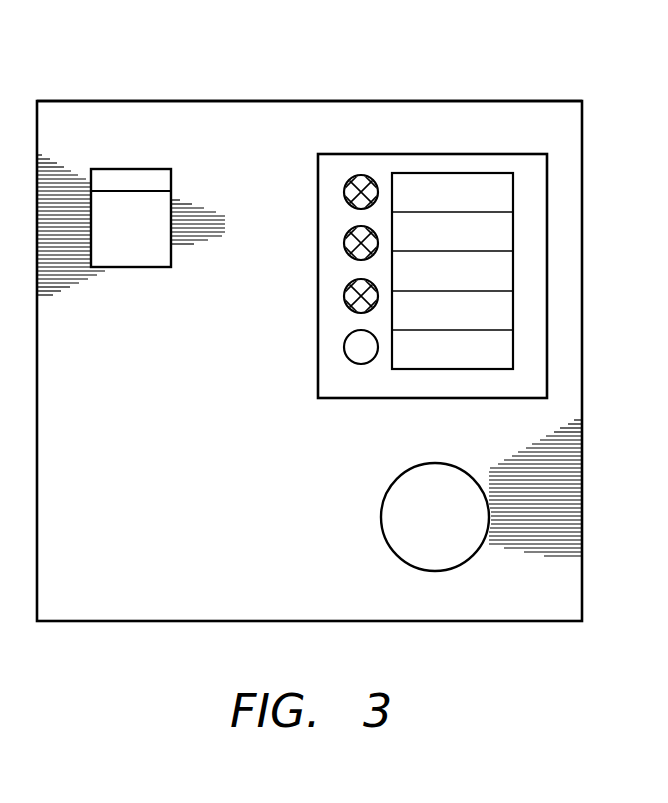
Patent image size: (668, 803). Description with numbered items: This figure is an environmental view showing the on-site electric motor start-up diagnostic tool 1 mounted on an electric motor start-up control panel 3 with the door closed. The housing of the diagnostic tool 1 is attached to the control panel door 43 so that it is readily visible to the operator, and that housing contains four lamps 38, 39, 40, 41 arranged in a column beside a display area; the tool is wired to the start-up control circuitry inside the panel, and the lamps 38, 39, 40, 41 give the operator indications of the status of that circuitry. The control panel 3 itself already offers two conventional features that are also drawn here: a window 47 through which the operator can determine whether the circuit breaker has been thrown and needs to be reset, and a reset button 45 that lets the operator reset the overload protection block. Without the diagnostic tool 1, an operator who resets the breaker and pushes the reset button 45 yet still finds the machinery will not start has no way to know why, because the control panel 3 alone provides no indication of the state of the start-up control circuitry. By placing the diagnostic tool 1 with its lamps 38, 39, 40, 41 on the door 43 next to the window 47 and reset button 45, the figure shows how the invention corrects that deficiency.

The on-site electric motor start-up diagnostic tool 1 is at (358, 398).
The electric motor start-up control panel 3 is at (454, 48).
The lamp 38 is at (345, 188).
The lamp 39 is at (344, 240).
The lamp 40 is at (344, 293).
The lamp 41 is at (345, 350).
The control panel door 43 is at (186, 101).
The reset button 45 is at (393, 553).
The window 47 is at (140, 267).